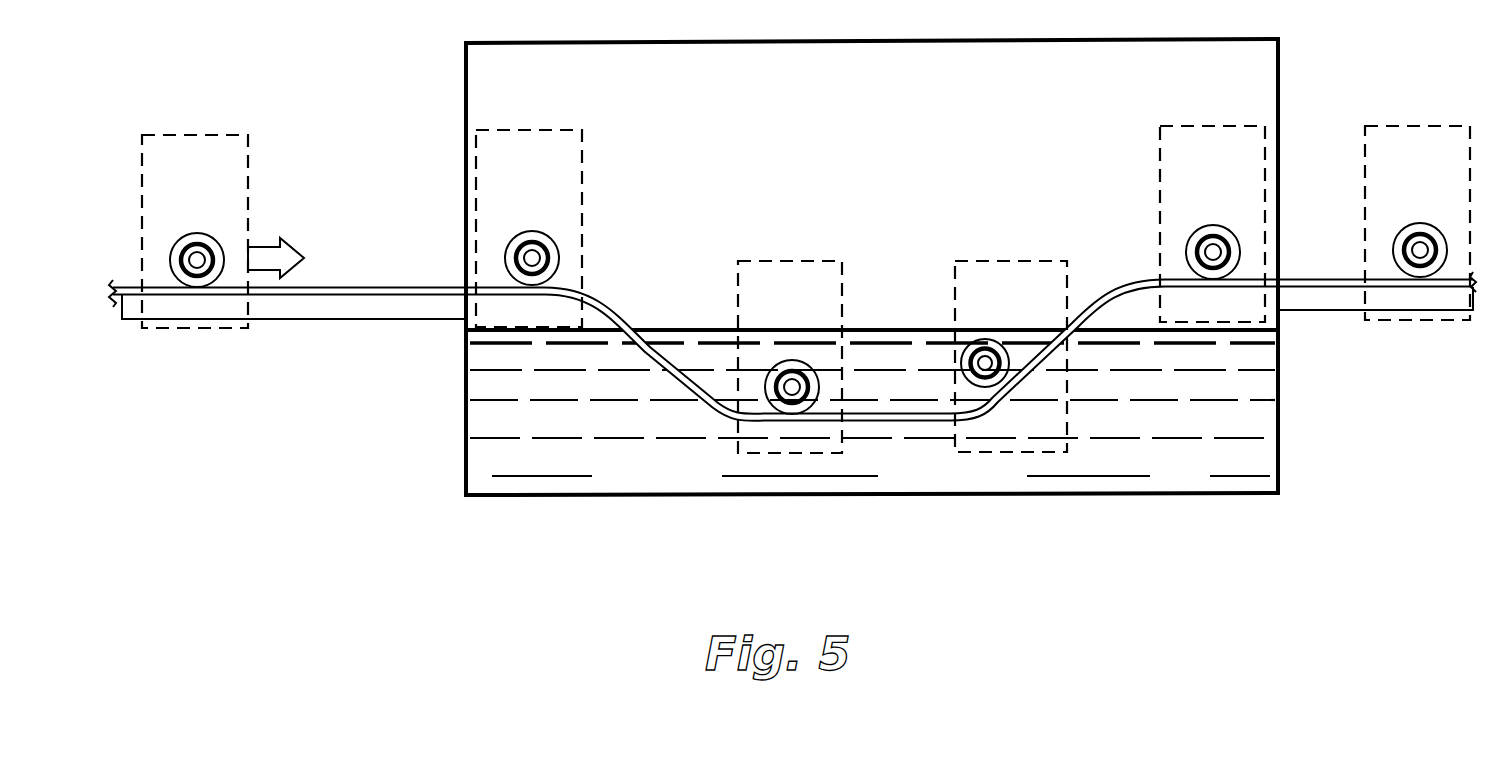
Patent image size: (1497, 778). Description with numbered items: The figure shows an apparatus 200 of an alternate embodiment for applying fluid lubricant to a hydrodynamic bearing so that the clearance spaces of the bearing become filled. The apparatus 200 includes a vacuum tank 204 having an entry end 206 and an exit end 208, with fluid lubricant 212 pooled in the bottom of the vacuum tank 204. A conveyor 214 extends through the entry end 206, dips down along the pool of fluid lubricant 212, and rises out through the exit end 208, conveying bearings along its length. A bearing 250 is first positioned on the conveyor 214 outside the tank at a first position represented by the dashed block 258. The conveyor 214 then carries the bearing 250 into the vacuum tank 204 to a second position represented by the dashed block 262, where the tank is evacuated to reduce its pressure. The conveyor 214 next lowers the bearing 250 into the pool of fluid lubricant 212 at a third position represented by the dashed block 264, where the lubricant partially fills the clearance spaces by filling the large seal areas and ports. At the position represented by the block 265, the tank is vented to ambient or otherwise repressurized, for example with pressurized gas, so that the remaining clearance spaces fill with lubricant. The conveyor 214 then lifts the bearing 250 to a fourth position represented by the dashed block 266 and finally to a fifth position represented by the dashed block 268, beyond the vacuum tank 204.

The apparatus 200 is at (518, 577).
The vacuum tank 204 is at (862, 40).
The entry end 206 is at (462, 160).
The exit end 208 is at (1280, 126).
The fluid lubricant 212 is at (710, 357).
The conveyor 214 is at (322, 288).
The bearing 250 is at (175, 242).
The first position block 258 is at (185, 133).
The second position block 262 is at (547, 130).
The third position block 264 is at (767, 262).
The third position block (repressurization) 265 is at (973, 262).
The fourth position block 266 is at (1160, 153).
The fifth position block 268 is at (1382, 126).